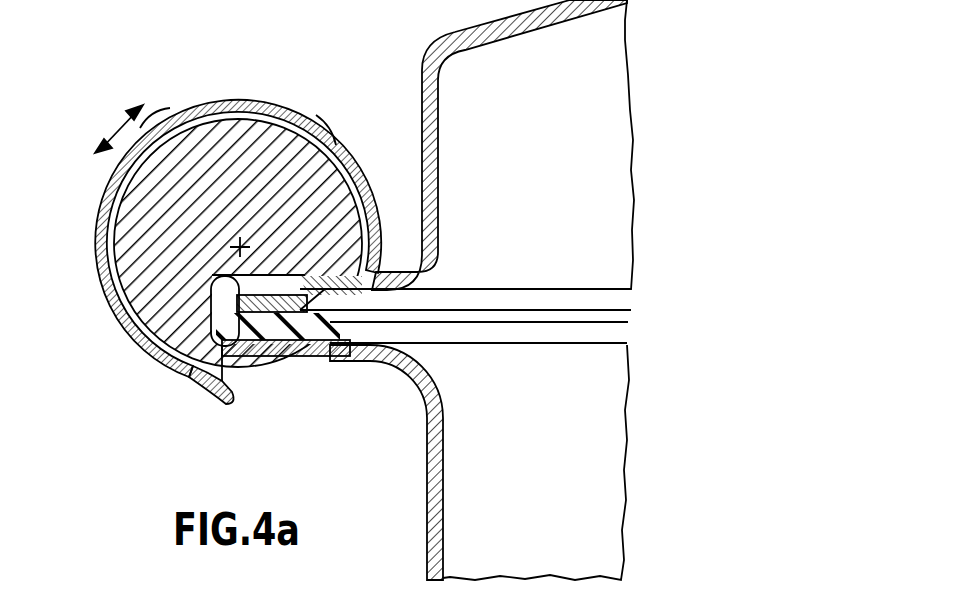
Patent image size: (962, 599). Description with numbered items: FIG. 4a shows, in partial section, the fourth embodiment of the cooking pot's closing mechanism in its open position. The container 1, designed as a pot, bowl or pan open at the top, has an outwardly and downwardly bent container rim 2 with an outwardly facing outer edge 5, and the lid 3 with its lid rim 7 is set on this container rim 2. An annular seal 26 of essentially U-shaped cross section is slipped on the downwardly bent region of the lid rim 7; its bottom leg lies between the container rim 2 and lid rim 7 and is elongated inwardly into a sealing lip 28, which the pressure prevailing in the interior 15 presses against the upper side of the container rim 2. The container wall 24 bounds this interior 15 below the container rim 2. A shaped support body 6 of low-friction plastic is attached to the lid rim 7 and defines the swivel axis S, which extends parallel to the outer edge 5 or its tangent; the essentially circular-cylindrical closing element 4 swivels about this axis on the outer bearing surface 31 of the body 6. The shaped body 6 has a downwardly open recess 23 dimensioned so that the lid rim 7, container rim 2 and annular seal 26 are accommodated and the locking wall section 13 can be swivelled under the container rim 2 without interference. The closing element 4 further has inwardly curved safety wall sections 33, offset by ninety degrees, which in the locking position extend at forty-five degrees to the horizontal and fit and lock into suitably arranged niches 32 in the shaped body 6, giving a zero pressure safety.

The container 1 is at (418, 438).
The container rim 2 is at (346, 361).
The lid 3 is at (508, 36).
The closing element 4 is at (284, 106).
The outer edge 5 is at (236, 356).
The shaped support body 6 is at (203, 135).
The lid rim 7 is at (386, 279).
The locking wall section 13 is at (226, 404).
The interior 15 is at (550, 469).
The recess 23 is at (186, 378).
The wall portion 24 is at (441, 500).
The annular seal 26 is at (338, 303).
The sealing lip 28 is at (332, 356).
The outer bearing surface 31 is at (153, 366).
The niche 32 is at (158, 128).
The safety wall section 33 is at (233, 104).
The swivel axis S is at (242, 246).